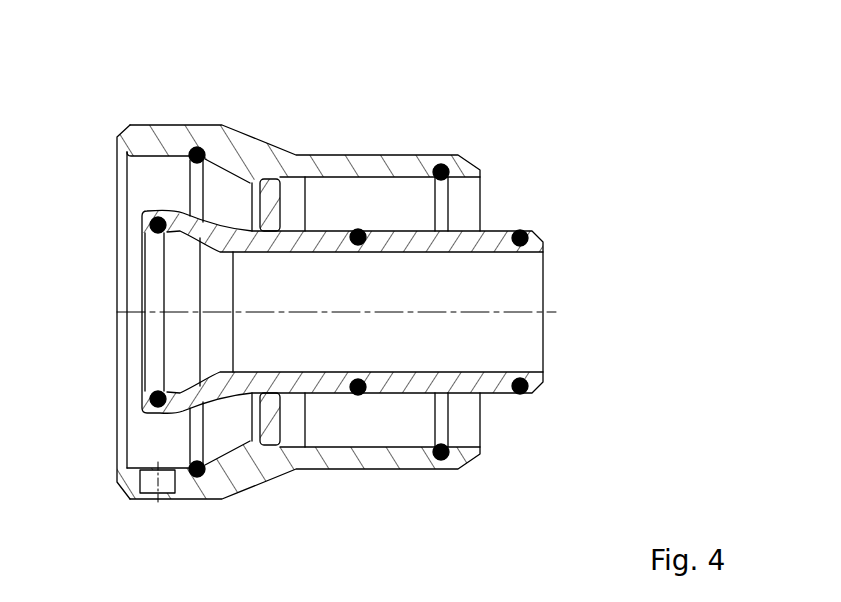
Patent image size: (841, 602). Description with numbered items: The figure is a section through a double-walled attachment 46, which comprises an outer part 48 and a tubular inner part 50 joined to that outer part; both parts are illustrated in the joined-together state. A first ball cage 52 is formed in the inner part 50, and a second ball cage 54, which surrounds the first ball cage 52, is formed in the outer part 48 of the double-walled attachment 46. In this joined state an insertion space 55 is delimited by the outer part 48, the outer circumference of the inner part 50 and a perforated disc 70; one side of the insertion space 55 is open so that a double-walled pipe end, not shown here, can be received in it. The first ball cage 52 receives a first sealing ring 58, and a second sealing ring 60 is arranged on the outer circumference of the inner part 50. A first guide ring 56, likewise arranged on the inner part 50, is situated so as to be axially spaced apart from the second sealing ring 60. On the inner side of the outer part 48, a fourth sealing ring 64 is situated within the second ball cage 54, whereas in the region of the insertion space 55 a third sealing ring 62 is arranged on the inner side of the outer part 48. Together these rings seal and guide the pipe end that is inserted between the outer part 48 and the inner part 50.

The double-walled attachment 46 is at (618, 170).
The outer part 48 is at (372, 141).
The tubular inner part 50 is at (498, 219).
The first ball cage 52 is at (157, 407).
The second ball cage 54 is at (163, 156).
The insertion space 55 is at (414, 435).
The first guide ring 56 is at (356, 396).
The first sealing ring 58 is at (152, 234).
The second sealing ring 60 is at (521, 394).
The third sealing ring 62 is at (440, 460).
The fourth sealing ring 64 is at (197, 477).
The perforated disc 70 is at (268, 207).